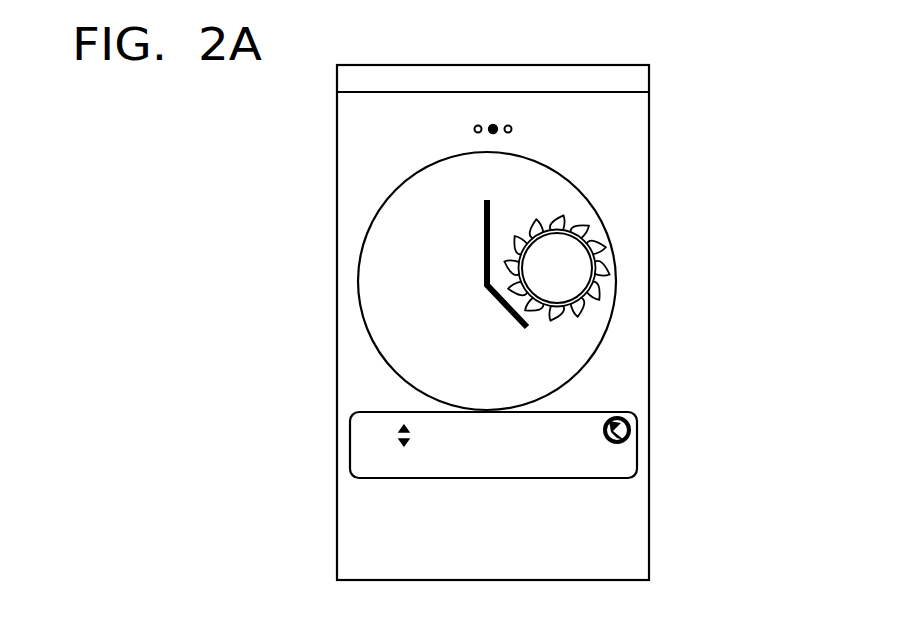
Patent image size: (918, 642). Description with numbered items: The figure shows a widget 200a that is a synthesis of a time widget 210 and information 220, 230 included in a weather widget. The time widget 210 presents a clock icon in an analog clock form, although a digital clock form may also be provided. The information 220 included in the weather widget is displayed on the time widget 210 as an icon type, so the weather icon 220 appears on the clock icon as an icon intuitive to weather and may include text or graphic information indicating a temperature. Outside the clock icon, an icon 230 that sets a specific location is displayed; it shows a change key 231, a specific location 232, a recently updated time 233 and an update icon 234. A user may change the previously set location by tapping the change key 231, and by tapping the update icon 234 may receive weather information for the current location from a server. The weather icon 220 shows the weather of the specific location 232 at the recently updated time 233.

The widget 200a is at (650, 125).
The time widget 210 is at (585, 202).
The weather icon 220 is at (606, 269).
The icon that sets a specific location 230 is at (619, 479).
The change key 231 is at (398, 441).
The specific location 232 is at (444, 452).
The recently updated time 233 is at (527, 479).
The update icon 234 is at (633, 413).